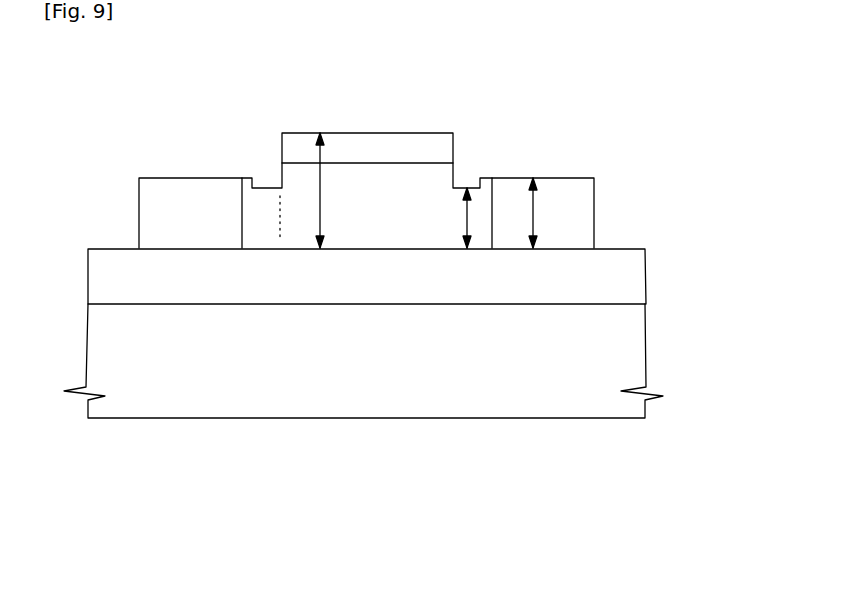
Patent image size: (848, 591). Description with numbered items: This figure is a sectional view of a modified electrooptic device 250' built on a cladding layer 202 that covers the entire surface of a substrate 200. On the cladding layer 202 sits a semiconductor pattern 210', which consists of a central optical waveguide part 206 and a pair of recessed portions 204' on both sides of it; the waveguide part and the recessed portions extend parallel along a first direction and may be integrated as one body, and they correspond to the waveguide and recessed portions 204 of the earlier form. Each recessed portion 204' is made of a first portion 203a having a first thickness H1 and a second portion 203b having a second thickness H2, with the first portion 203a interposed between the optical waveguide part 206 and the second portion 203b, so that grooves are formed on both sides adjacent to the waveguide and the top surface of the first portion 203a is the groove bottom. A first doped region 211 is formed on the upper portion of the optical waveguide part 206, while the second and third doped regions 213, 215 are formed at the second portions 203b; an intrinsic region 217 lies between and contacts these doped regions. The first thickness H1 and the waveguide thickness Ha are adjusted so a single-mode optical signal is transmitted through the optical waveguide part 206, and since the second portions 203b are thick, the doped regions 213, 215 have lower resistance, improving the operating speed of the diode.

The electrooptic device 250' is at (594, 45).
The substrate 200 is at (630, 350).
The cladding layer 202 is at (633, 280).
The first portion 203a is at (264, 252).
The second portion 203b is at (186, 252).
The recessed portions 204 is at (227, 505).
The recessed portions 204' is at (508, 505).
The optical waveguide part 206 is at (362, 252).
The semiconductor pattern 210' is at (366, 550).
The first doped region 211 is at (440, 145).
The second doped region 213 is at (155, 210).
The third doped region 215 is at (578, 210).
The intrinsic region 217 is at (418, 198).
The thickness of optical waveguide part Ha is at (334, 190).
The first thickness H1 is at (465, 222).
The second thickness H2 is at (521, 213).